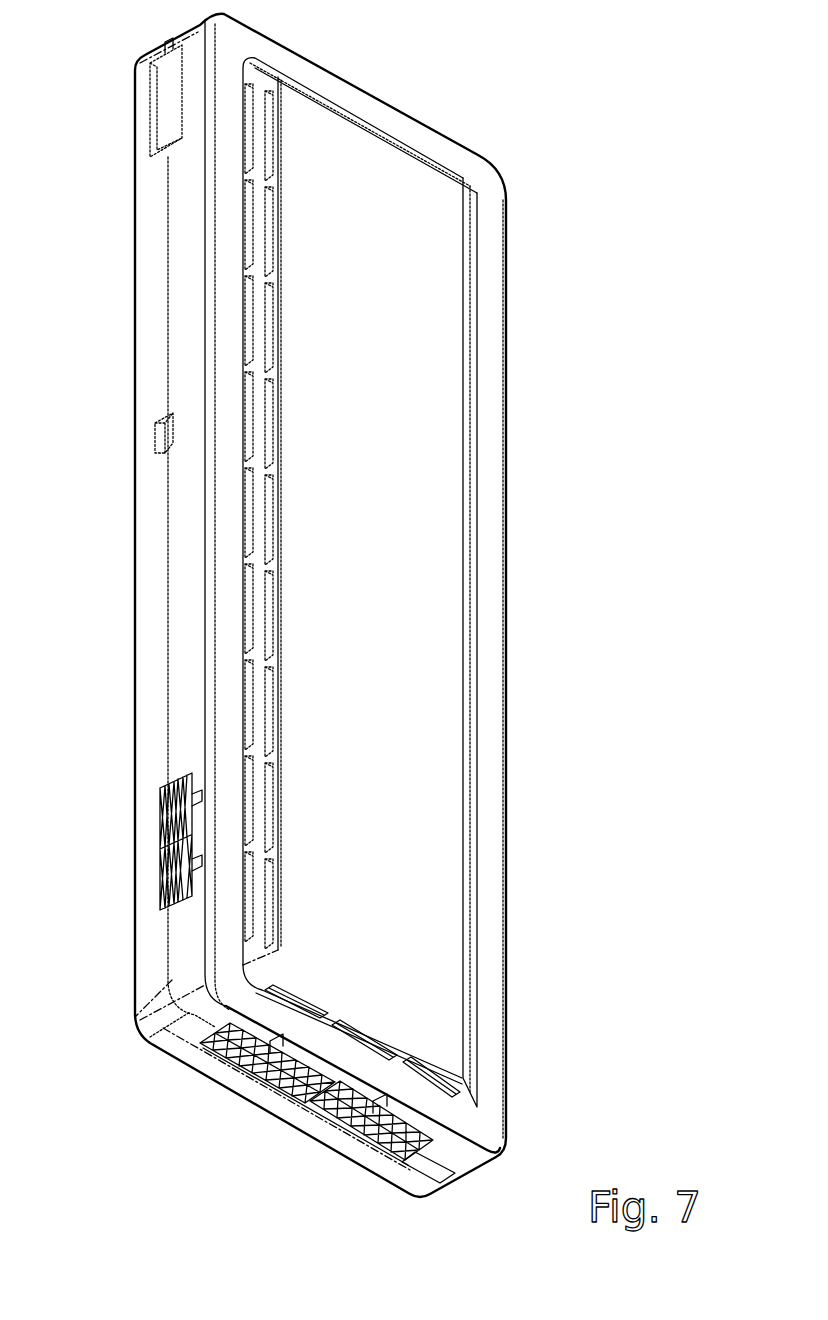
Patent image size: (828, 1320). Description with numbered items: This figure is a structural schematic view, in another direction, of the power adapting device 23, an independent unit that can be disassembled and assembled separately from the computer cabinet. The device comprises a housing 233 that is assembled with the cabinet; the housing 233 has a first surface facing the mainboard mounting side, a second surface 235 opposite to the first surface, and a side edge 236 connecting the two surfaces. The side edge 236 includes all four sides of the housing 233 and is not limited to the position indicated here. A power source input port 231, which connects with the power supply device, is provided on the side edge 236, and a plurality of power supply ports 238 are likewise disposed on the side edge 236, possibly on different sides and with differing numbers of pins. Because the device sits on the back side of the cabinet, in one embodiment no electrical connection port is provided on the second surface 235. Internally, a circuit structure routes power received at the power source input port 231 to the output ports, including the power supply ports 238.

The power adapting device 23 is at (633, 52).
The power source input port 231 is at (330, 1115).
The housing 233 is at (139, 1031).
The second surface 235 is at (487, 537).
The side edge 236 is at (143, 350).
The power supply ports 238 is at (160, 868).